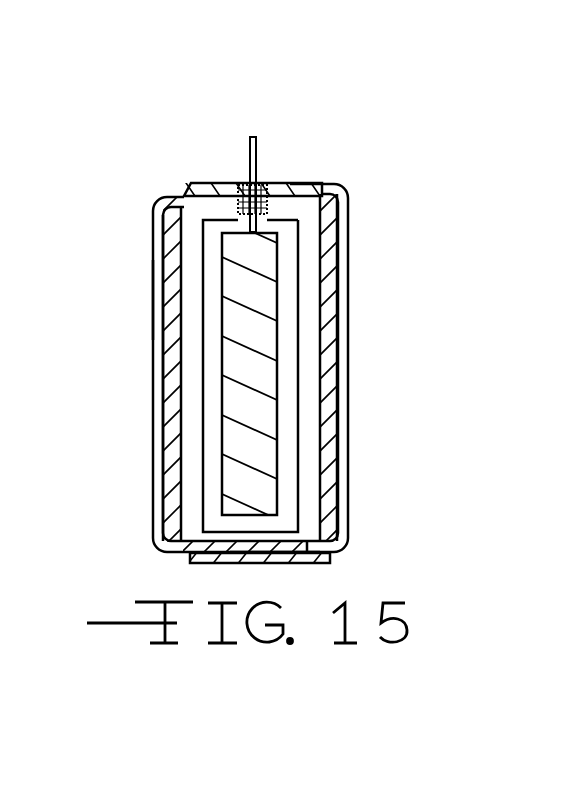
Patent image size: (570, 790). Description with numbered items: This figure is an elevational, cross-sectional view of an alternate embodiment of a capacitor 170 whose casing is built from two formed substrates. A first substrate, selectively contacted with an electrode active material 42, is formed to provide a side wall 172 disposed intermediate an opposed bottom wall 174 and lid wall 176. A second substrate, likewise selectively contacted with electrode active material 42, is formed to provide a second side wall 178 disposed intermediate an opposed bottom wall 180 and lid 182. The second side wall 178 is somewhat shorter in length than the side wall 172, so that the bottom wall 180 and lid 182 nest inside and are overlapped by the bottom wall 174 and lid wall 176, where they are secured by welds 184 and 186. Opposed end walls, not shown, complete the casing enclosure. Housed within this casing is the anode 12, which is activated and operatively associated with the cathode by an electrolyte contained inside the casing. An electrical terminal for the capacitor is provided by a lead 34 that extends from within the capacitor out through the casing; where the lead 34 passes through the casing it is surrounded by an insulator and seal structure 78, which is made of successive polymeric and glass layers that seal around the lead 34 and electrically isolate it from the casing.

The anode 12 is at (292, 349).
The lead 34 is at (256, 155).
The electrode active material 42 is at (172, 395).
The insulator and seal structure 78 is at (306, 209).
The capacitor 170 is at (410, 184).
The side wall 172 is at (348, 295).
The bottom wall 174 is at (287, 556).
The lid wall 176 is at (287, 190).
The second side wall 178 is at (155, 309).
The bottom wall 180 is at (203, 535).
The lid 182 is at (188, 200).
The weld 184 is at (187, 556).
The weld 186 is at (185, 190).